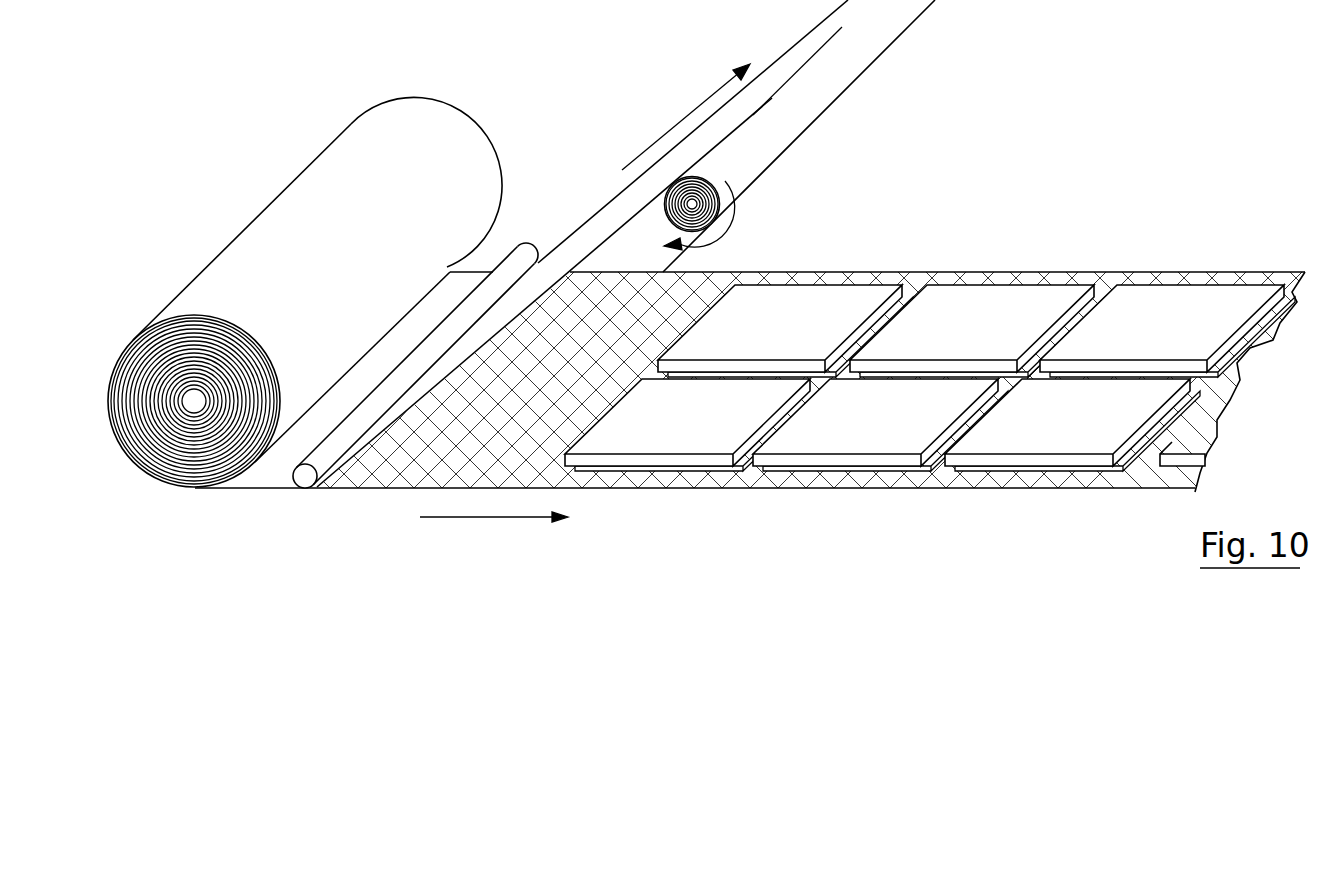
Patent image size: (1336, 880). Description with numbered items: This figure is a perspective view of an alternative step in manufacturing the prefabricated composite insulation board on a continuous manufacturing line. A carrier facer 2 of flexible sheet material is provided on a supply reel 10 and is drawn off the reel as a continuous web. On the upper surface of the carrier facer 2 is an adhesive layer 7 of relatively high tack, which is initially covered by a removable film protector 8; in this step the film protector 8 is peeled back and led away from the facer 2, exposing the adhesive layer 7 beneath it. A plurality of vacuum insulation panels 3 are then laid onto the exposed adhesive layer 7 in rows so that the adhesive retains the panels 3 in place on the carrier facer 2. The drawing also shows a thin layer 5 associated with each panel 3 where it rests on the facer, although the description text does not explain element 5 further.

The supply reel 10 is at (190, 433).
The carrier facer 2 is at (272, 488).
The removable film protector 8 is at (602, 222).
The adhesive layer 7 is at (668, 303).
The vacuum insulation panels 3 is at (772, 297).
The adhesive strip 5 is at (893, 293).